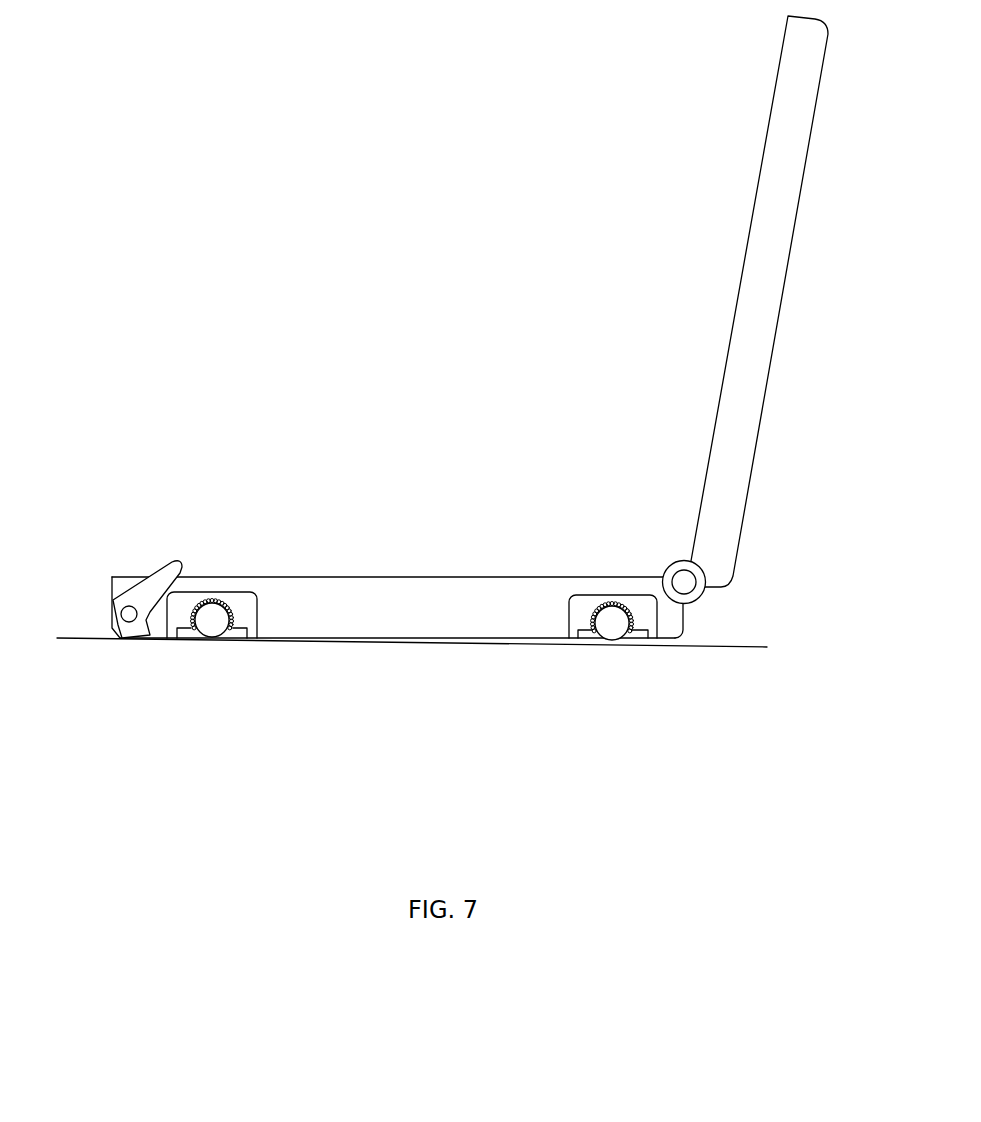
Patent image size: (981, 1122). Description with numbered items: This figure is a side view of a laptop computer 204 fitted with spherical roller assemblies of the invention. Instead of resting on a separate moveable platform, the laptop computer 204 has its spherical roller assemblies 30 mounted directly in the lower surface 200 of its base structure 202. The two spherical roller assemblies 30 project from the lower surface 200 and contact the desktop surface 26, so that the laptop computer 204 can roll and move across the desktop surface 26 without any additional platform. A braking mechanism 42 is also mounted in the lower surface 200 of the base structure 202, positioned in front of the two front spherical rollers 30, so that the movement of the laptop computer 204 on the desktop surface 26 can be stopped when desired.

The laptop computer 204 is at (512, 200).
The base structure 202 is at (376, 528).
The lower surface 200 is at (323, 640).
The braking mechanism 42 is at (158, 640).
The spherical roller assemblies 30 is at (215, 652).
The desktop surface 26 is at (747, 657).